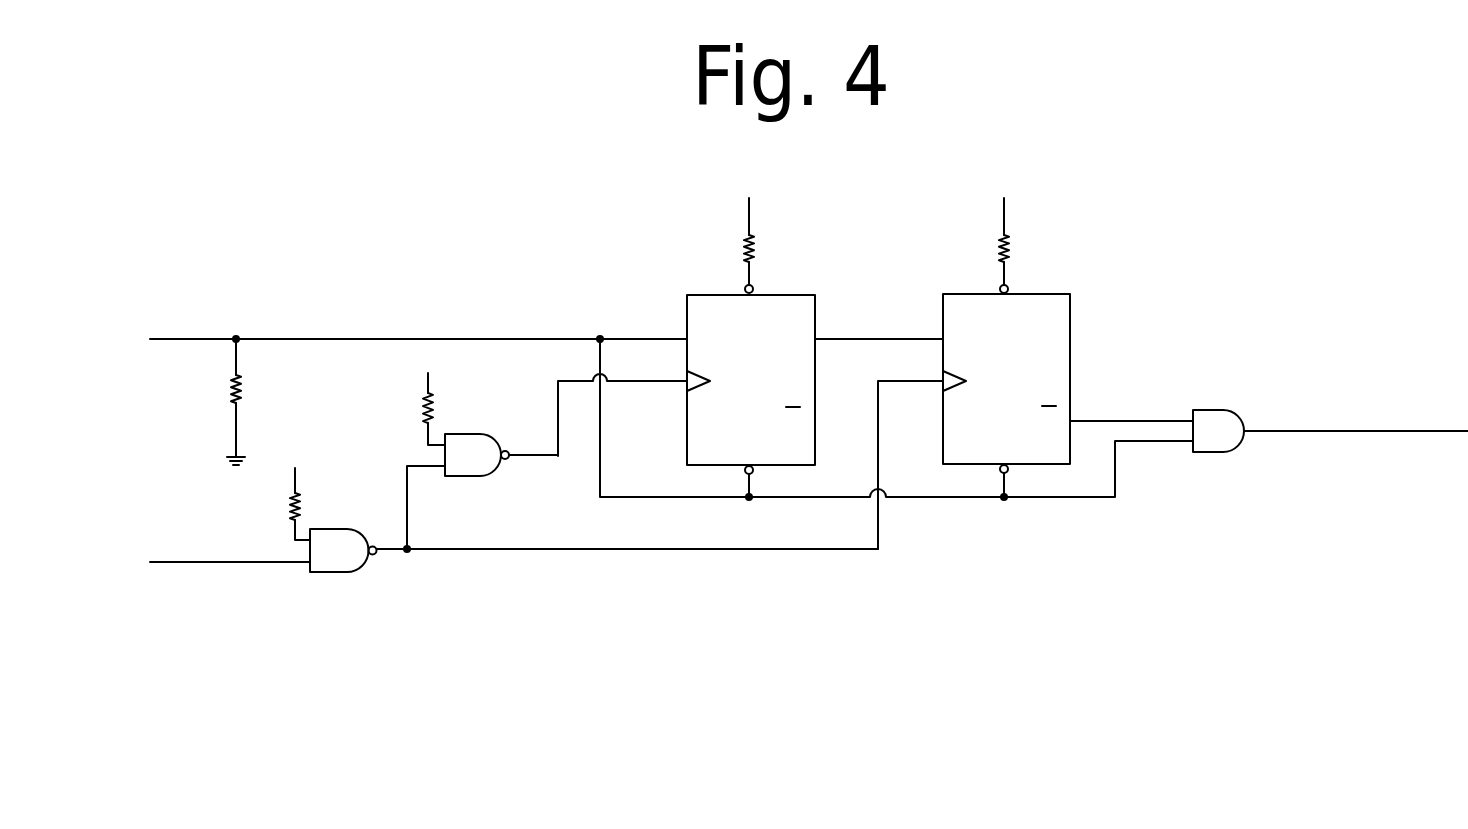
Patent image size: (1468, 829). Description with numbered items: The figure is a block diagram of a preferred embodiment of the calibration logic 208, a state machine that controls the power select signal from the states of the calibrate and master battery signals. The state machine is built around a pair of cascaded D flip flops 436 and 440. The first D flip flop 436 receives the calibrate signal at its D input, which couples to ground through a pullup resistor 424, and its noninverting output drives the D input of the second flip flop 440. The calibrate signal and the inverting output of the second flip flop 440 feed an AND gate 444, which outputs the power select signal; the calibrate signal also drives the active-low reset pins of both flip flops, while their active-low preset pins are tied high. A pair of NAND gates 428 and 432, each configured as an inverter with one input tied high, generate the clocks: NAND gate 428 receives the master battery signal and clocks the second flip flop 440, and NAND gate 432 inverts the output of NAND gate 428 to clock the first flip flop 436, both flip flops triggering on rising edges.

The calibration logic 208 is at (446, 168).
The pullup resistor 424 is at (236, 383).
The NAND gate 428 is at (333, 572).
The NAND gate 432 is at (458, 476).
The first D flip flop 436 is at (718, 295).
The second D flip flop 440 is at (985, 294).
The AND gate 444 is at (1210, 410).